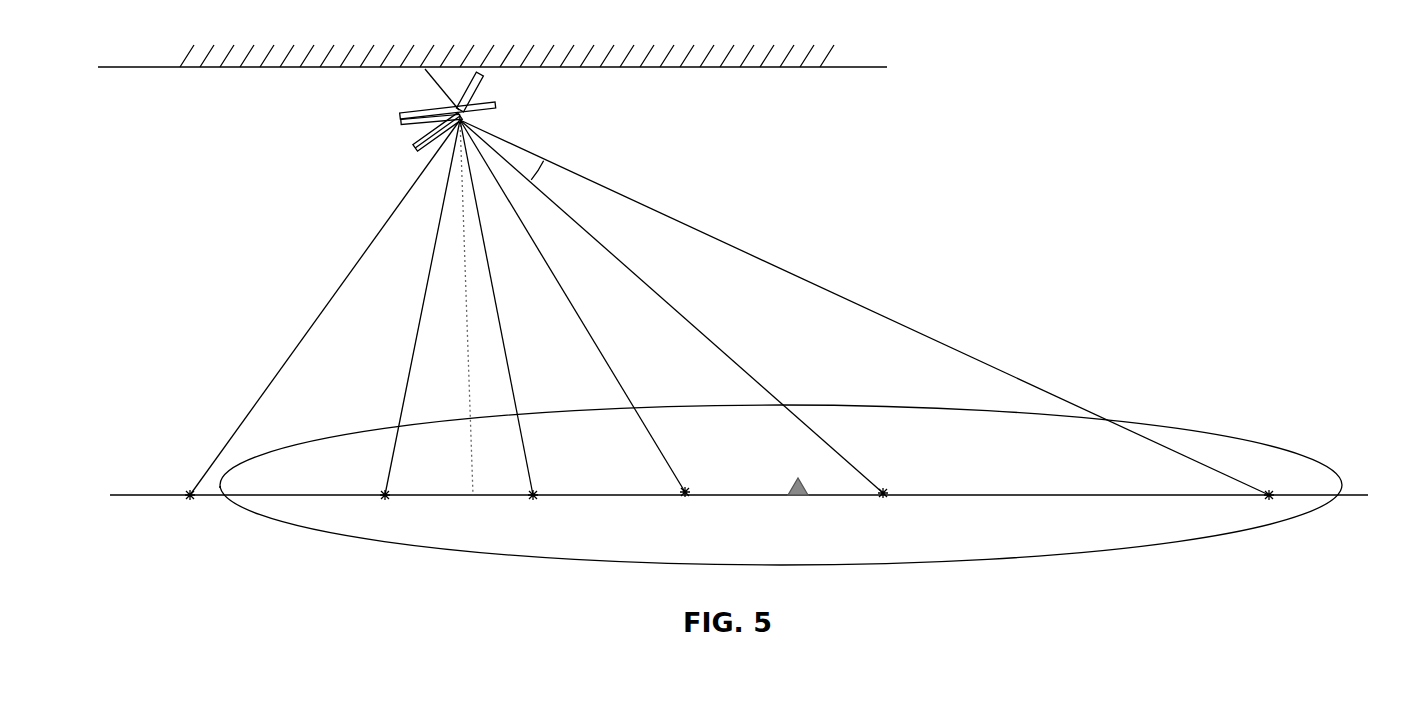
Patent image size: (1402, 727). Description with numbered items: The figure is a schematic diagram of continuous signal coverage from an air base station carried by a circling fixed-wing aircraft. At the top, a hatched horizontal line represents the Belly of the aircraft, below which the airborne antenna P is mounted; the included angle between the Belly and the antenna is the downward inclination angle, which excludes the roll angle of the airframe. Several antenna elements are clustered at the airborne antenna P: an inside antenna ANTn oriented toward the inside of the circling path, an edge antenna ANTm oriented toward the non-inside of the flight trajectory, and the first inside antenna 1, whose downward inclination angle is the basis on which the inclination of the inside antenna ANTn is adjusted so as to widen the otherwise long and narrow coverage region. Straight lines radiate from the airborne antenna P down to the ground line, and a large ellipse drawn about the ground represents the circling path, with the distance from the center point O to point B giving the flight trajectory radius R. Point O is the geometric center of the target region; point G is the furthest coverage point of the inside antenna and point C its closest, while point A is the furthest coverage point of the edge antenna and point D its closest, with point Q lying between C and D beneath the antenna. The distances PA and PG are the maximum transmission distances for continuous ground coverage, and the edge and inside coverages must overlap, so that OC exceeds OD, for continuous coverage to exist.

The belly of the fixed-wing aircraft Belly is at (498, 52).
The inside antenna ANTn is at (582, 96).
The edge antenna ANTm is at (334, 119).
The inside antenna ANT1 1 is at (354, 142).
The airborne antenna P is at (478, 128).
The flight trajectory radius R is at (781, 485).
The furthest signal coverage point of the edge antenna A is at (321, 322).
The point B is at (226, 505).
The closest signal coverage point of the inside antenna C is at (420, 322).
The point Q is at (473, 322).
The closest signal coverage point of the edge antenna D is at (502, 322).
The geometric center point of the target region O is at (805, 501).
The furthest signal coverage point of the inside antenna G is at (870, 320).